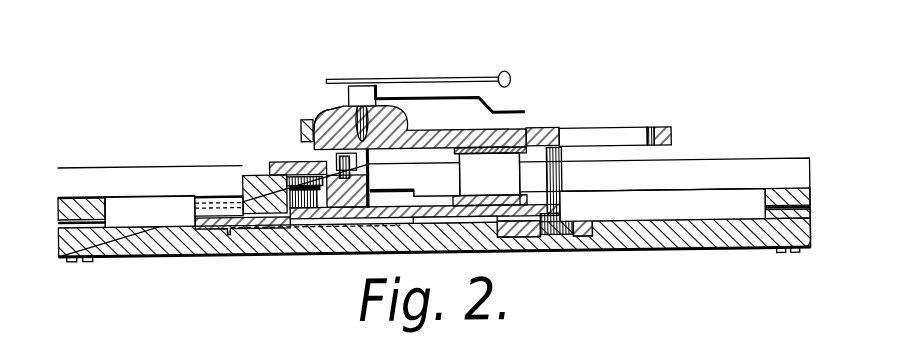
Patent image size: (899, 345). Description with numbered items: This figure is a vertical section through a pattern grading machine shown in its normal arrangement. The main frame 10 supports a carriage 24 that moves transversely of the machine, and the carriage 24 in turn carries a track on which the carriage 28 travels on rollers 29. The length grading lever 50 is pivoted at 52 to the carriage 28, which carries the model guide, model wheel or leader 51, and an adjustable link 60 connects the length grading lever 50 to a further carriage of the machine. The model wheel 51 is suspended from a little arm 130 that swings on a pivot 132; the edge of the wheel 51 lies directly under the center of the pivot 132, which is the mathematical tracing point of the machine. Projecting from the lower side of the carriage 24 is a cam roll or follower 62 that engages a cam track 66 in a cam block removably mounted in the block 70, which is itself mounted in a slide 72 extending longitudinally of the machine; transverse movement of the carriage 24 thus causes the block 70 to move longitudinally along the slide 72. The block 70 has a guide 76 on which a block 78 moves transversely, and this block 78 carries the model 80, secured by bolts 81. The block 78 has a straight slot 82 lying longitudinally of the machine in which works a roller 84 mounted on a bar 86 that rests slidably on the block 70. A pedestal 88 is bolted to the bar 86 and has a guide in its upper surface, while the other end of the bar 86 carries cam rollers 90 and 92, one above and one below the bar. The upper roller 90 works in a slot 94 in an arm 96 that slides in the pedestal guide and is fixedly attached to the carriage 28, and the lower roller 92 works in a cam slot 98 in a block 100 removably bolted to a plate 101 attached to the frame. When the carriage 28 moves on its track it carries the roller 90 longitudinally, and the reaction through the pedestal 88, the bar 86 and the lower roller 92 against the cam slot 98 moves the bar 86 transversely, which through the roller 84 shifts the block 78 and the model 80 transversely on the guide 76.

The main frame 10 is at (58, 225).
The carriage 24 is at (320, 121).
The carriage 28 is at (388, 100).
The rollers 29 is at (350, 107).
The length grading lever 50 is at (487, 178).
The model wheel 51 is at (390, 173).
The pivot 52 is at (358, 95).
The adjustable link 60 is at (470, 78).
The cam roll 62 is at (420, 154).
The cam track 66 is at (180, 202).
The block 70 is at (205, 250).
The slide 72 is at (237, 212).
The guide 76 is at (197, 189).
The block 78 is at (250, 183).
The model 80 is at (282, 168).
The bolts 81 is at (318, 156).
The straight slot 82 is at (450, 250).
The roller 84 is at (315, 233).
The bar 86 is at (465, 175).
The pedestal 88 is at (535, 131).
The cam roller 90 is at (572, 132).
The cam roller 92 is at (660, 250).
The slot 94 is at (613, 137).
The arm 96 is at (673, 135).
The cam slot 98 is at (556, 250).
The block 100 is at (520, 246).
The plate 101 is at (742, 236).
The little arm 130 is at (298, 175).
The pivot 132 is at (302, 126).